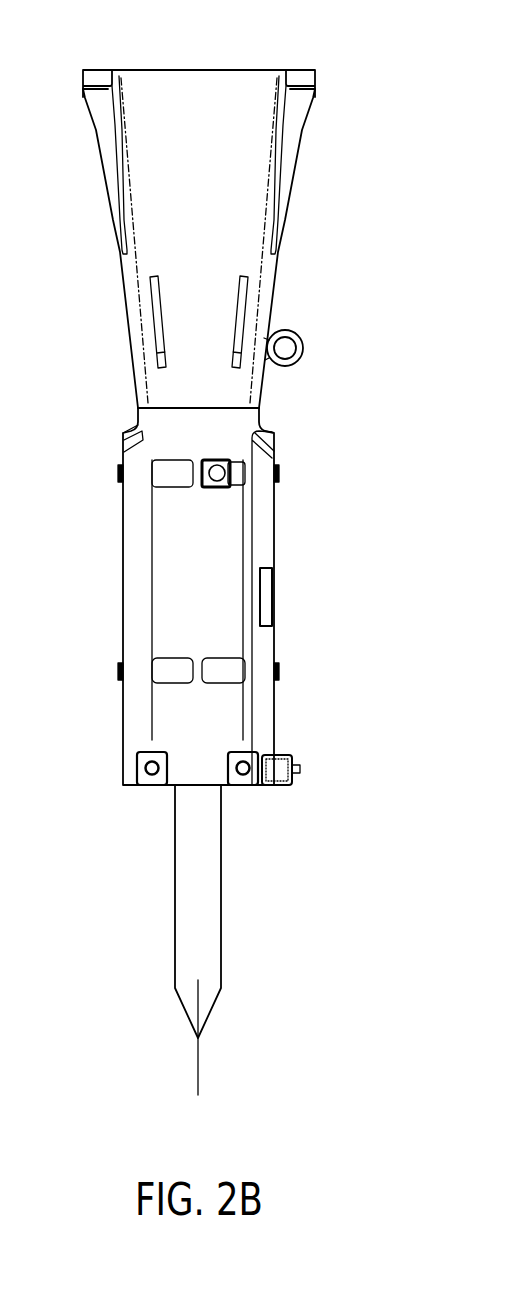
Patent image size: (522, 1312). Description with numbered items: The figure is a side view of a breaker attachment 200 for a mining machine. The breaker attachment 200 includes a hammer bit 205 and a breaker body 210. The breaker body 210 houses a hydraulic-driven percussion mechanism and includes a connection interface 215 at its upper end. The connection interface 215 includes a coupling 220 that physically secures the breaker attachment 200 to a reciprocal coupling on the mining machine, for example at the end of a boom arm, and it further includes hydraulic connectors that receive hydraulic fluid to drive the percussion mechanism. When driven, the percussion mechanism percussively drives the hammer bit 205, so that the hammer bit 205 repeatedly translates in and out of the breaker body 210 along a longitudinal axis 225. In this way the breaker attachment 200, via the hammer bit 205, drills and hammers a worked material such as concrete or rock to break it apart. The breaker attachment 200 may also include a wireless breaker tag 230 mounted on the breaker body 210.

The breaker attachment 200 is at (248, 554).
The hammer bit 205 is at (215, 1007).
The breaker body 210 is at (229, 596).
The connection interface 215 is at (248, 205).
The coupling 220 is at (197, 70).
The longitudinal axis 225 is at (198, 1073).
The wireless breaker tag 230 is at (272, 599).